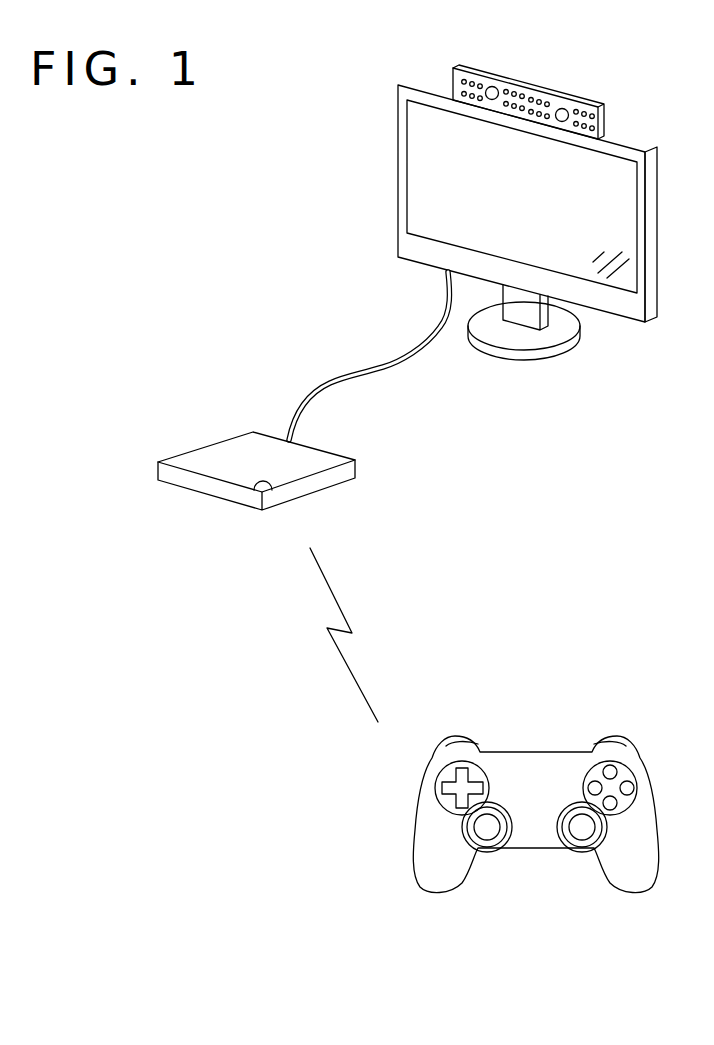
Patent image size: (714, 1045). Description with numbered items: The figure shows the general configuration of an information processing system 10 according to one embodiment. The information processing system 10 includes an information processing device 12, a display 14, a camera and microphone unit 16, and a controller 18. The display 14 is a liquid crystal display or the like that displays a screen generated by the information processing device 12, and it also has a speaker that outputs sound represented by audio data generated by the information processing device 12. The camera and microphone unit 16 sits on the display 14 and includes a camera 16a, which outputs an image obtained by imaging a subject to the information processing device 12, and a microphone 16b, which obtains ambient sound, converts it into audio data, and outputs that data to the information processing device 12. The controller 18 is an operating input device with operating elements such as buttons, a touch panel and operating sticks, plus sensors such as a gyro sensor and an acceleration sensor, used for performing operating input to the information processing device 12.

The information processing system 10 is at (512, 953).
The information processing device 12 is at (200, 447).
The display 14 is at (659, 229).
The camera and microphone unit 16 is at (606, 121).
The camera 16a is at (492, 100).
The microphone 16b is at (519, 81).
The controller 18 is at (657, 807).